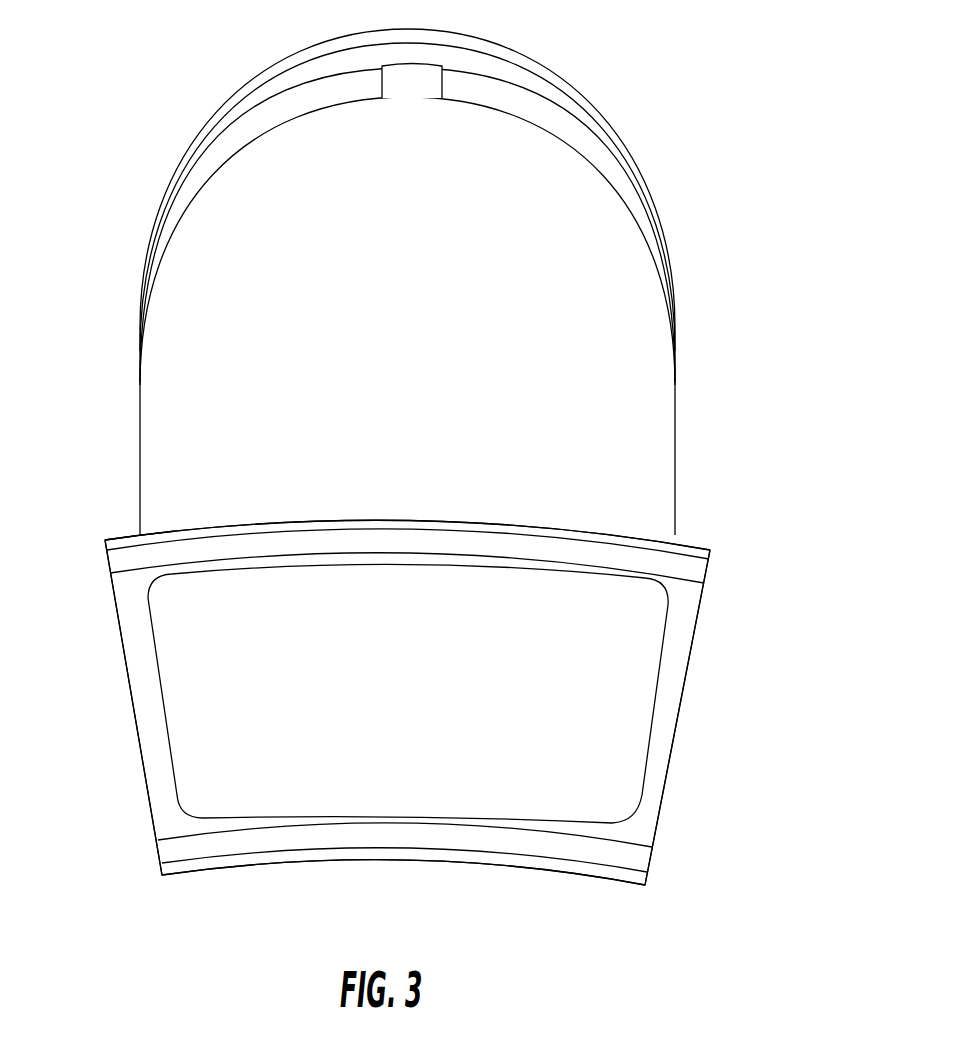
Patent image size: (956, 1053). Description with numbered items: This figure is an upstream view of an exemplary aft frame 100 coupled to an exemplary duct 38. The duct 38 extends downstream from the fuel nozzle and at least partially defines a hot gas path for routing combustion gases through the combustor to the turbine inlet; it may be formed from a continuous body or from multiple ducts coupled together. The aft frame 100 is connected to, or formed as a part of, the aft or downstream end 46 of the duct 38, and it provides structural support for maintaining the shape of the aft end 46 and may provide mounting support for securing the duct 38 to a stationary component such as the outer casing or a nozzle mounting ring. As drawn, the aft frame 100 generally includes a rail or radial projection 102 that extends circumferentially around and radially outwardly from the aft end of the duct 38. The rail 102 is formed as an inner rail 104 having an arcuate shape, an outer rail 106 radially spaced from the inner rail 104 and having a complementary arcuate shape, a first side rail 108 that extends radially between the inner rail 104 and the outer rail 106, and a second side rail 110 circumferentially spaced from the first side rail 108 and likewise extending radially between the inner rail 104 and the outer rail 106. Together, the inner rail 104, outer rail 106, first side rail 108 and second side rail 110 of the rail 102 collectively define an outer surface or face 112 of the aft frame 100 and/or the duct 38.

The duct 38 is at (526, 172).
The aft end of the duct 46 is at (134, 530).
The aft frame 100 is at (702, 518).
The rail 102 is at (256, 874).
The inner rail 104 is at (453, 862).
The outer rail 106 is at (515, 523).
The first side rail 108 is at (148, 800).
The second side rail 110 is at (672, 762).
The outer surface or face 112 is at (402, 542).